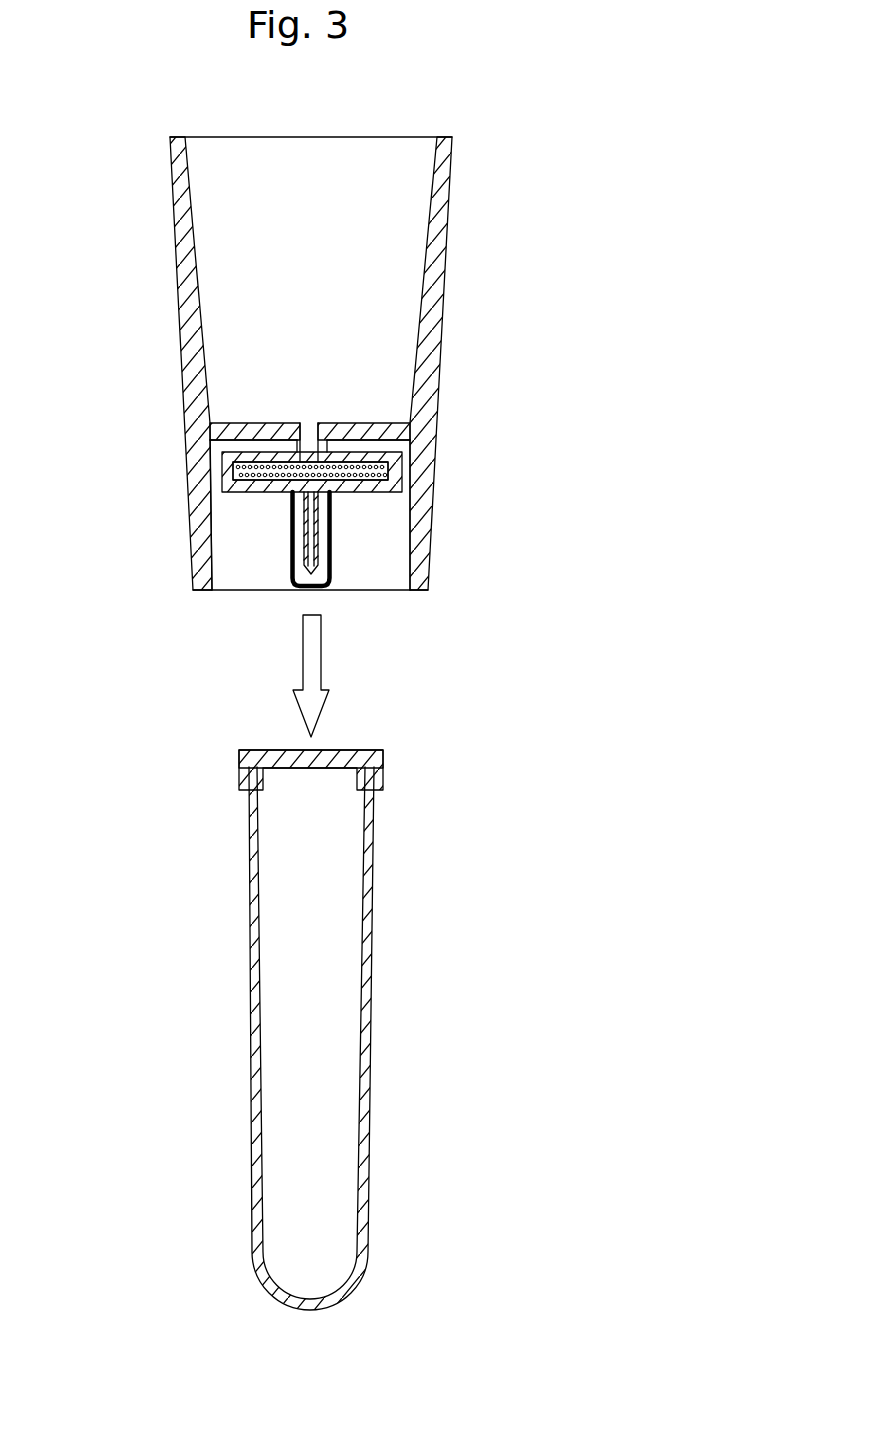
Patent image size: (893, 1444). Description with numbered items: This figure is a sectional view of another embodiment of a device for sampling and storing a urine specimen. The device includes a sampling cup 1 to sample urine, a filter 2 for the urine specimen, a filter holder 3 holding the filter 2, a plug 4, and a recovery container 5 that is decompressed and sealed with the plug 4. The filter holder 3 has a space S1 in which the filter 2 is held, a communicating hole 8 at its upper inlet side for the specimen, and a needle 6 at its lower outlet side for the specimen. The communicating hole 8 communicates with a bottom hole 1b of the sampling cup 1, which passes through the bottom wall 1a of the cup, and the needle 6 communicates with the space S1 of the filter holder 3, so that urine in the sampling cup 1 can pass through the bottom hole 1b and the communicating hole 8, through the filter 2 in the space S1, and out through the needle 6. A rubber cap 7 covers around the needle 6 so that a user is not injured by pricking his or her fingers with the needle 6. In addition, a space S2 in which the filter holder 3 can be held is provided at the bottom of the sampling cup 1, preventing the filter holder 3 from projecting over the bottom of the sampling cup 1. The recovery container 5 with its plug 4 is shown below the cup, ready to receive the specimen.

The sampling cup 1 is at (447, 312).
The partition wall 1a is at (400, 447).
The bottom hole 1b is at (312, 426).
The filter 2 is at (383, 470).
The filter holder 3 is at (370, 497).
The plug 4 is at (263, 750).
The recovery container 5 is at (375, 957).
The needle 6 is at (293, 562).
The rubber cap 7 is at (292, 516).
The communicating hole 8 is at (294, 450).
The space S1 is at (250, 497).
The space S2 is at (390, 580).